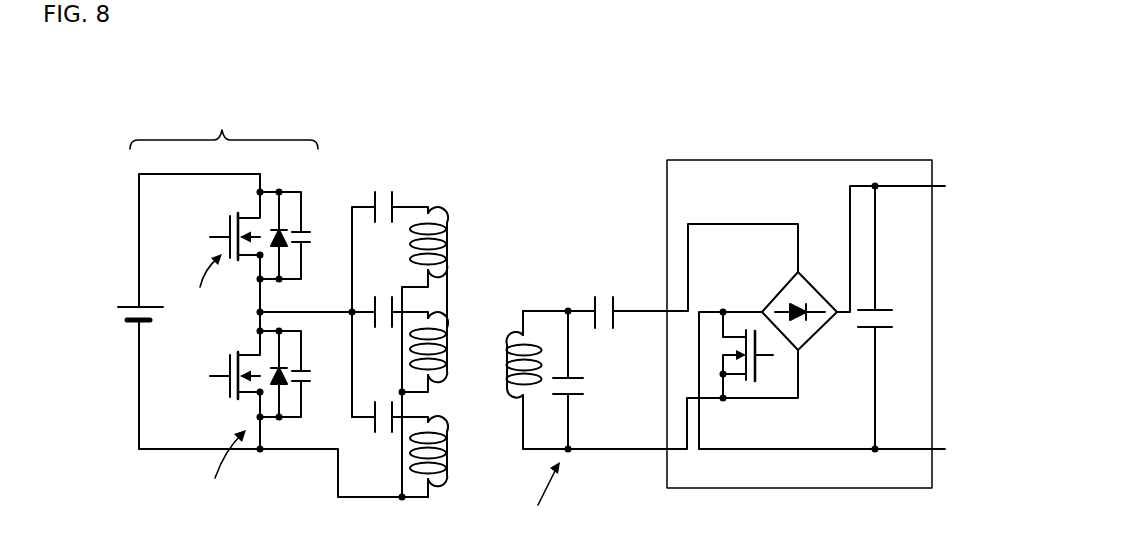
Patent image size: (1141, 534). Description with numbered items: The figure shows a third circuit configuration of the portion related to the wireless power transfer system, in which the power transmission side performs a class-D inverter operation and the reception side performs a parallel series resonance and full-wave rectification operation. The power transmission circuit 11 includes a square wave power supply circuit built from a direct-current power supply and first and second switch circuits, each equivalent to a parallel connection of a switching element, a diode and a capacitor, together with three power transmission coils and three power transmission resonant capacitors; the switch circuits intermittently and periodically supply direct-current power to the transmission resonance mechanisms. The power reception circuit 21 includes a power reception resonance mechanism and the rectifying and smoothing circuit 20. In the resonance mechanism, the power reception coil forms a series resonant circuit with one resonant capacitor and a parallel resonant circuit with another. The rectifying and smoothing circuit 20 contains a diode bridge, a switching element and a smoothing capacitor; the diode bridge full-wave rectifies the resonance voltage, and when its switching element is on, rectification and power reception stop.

The power transmission circuit 11 is at (130, 87).
The power reception circuit 21 is at (503, 87).
The rectifying and smoothing circuit 20 is at (922, 160).